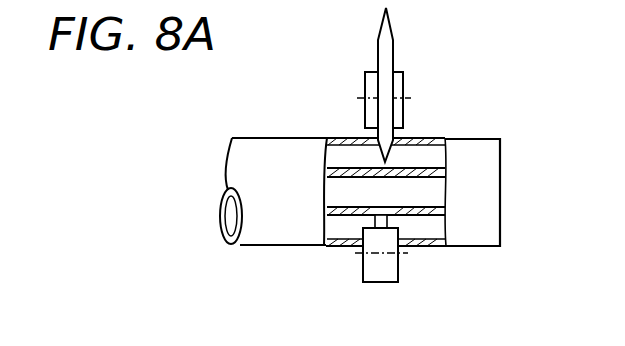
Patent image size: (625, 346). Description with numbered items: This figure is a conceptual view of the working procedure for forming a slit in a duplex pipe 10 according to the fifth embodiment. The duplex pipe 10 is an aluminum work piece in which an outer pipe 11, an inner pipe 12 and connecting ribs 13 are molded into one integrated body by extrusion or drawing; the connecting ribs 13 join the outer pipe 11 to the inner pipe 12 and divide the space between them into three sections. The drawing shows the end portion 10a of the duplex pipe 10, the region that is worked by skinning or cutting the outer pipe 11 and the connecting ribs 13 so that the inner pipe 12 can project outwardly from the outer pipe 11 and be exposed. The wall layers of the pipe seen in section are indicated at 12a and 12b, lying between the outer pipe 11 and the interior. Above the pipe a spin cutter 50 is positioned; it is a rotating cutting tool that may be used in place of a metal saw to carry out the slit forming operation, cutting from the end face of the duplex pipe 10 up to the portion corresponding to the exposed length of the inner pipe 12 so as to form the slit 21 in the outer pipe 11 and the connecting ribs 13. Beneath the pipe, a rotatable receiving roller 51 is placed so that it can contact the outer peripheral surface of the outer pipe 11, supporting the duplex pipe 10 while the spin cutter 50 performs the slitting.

The duplex pipe 10 is at (243, 156).
The end portion 10a is at (491, 132).
The outer pipe 11 is at (440, 137).
The inner pipe 12 is at (433, 218).
The partition wall 12a is at (444, 168).
The partition wall 12b is at (444, 186).
The connecting ribs 13 is at (410, 137).
The slit 21 is at (373, 223).
The spin cutter 50 is at (387, 50).
The rotatable receiving roller 51 is at (382, 273).